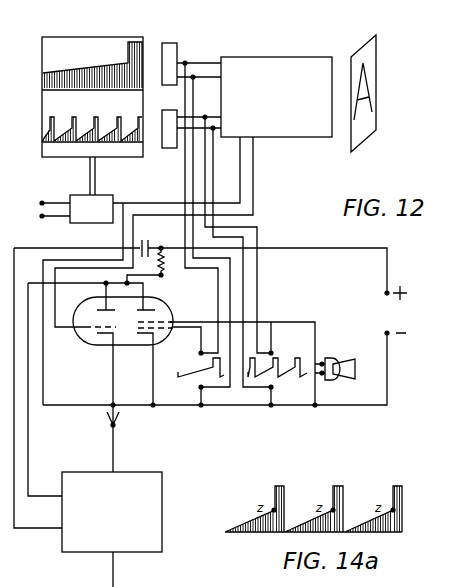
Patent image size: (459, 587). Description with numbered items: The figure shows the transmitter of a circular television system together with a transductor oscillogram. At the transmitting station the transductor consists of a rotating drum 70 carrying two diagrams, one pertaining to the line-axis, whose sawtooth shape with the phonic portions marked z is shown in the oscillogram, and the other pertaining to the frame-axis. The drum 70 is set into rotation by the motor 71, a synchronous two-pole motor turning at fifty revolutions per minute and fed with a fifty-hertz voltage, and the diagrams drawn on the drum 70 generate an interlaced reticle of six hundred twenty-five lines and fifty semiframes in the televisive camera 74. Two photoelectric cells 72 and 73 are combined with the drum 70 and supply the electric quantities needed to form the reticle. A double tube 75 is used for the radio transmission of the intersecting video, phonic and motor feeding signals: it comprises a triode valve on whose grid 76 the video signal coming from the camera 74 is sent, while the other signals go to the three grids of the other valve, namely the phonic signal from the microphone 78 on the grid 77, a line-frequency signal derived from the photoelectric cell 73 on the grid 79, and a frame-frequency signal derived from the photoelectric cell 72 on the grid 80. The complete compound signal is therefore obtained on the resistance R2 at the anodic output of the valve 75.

The rotating drum 70 is at (73, 47).
The motor 71 is at (106, 197).
The photoelectric cell 72 is at (172, 48).
The photoelectric cell 73 is at (165, 146).
The televisive camera 74 is at (283, 62).
The double tube 75 is at (88, 339).
The grid 76 is at (85, 323).
The grid 77 is at (166, 315).
The microphone 78 is at (334, 358).
The grid 79 is at (178, 323).
The grid 80 is at (161, 334).
The resistance R2 is at (154, 265).